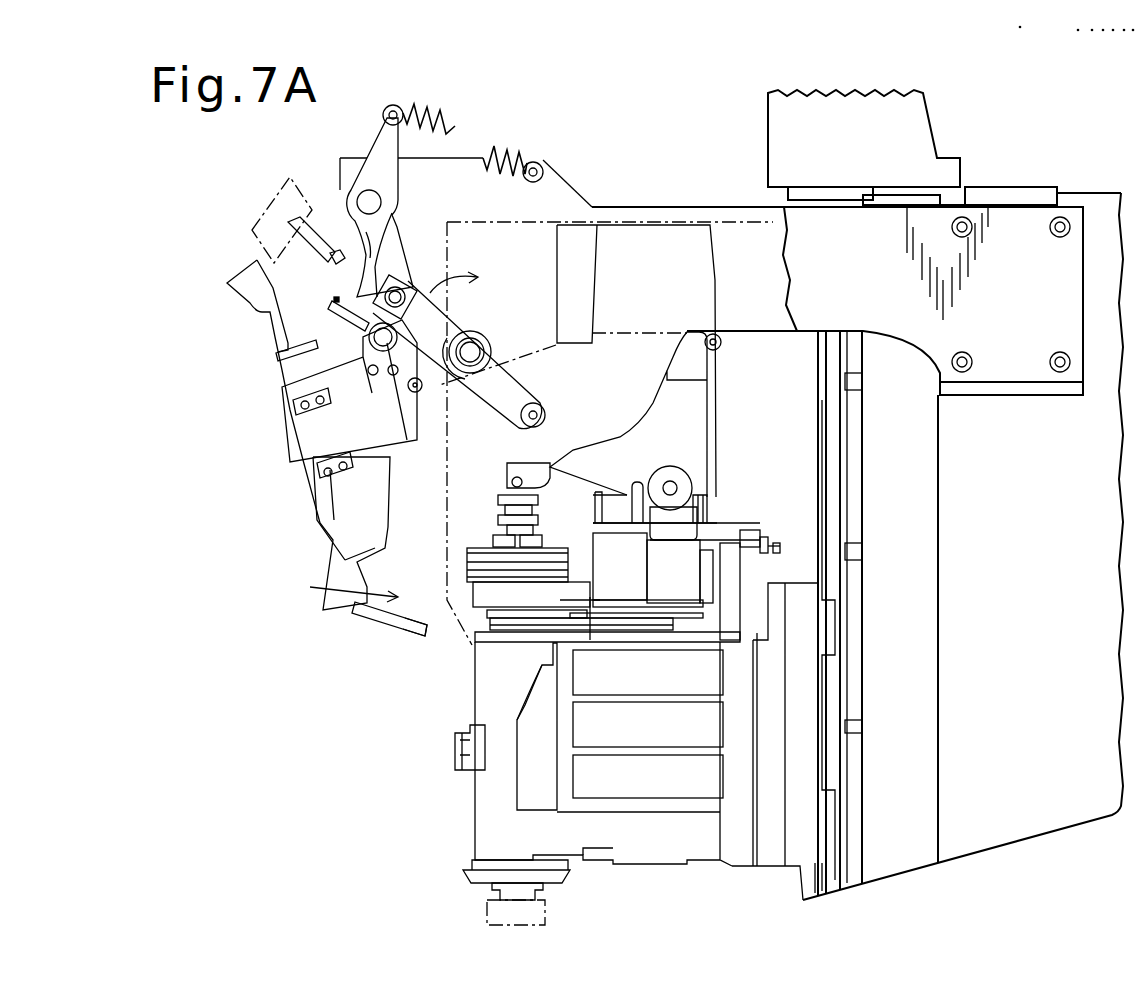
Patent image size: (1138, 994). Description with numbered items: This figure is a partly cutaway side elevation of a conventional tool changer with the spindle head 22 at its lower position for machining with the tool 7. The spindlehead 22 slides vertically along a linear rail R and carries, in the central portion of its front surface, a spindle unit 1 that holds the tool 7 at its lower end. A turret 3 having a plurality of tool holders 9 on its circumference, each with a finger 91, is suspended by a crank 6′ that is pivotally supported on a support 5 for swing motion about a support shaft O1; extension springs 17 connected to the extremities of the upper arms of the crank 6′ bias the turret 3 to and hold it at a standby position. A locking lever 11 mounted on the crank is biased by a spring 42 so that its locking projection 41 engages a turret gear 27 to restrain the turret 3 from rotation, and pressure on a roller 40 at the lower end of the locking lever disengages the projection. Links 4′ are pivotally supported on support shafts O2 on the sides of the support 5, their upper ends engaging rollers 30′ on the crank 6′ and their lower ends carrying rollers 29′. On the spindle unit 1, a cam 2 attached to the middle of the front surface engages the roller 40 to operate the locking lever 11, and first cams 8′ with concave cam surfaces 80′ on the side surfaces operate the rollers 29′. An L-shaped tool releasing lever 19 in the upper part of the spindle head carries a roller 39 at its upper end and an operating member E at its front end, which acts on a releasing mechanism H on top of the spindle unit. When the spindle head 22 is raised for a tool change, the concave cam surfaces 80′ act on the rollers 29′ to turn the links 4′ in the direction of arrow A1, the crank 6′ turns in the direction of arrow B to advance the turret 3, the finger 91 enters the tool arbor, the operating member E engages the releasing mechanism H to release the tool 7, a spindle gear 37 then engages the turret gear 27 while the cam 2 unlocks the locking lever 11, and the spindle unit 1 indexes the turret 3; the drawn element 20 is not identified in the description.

The spindle unit 1 is at (487, 813).
The cam 2 is at (455, 747).
The turret 3 is at (332, 543).
The link 4′ is at (443, 313).
The support 5 is at (572, 190).
The crank 6′ is at (378, 142).
The tool 7 is at (252, 228).
The first cam 8′ is at (523, 733).
The tool holder 9 is at (373, 622).
The locking lever 11 is at (333, 306).
The extension spring 17 is at (454, 124).
The tool releasing lever 19 is at (697, 428).
The rail 20 is at (822, 830).
The spindlehead 22 is at (593, 843).
The turret gear 27 is at (387, 530).
The roller 29′ is at (546, 420).
The roller 30′ is at (380, 267).
The spindle gear 37 is at (463, 874).
The roller 39 is at (722, 344).
The roller 40 is at (420, 391).
The locking projection 41 is at (330, 330).
The spring 42 is at (403, 448).
The concave cam surface 80′ is at (533, 697).
The finger 91 is at (421, 634).
The arrow A1 is at (472, 285).
The arrow B is at (367, 596).
The operating member E is at (508, 470).
The releasing mechanism H is at (492, 505).
The support shaft O1 is at (357, 202).
The support shaft O2 is at (482, 344).
The linear rail R is at (832, 768).